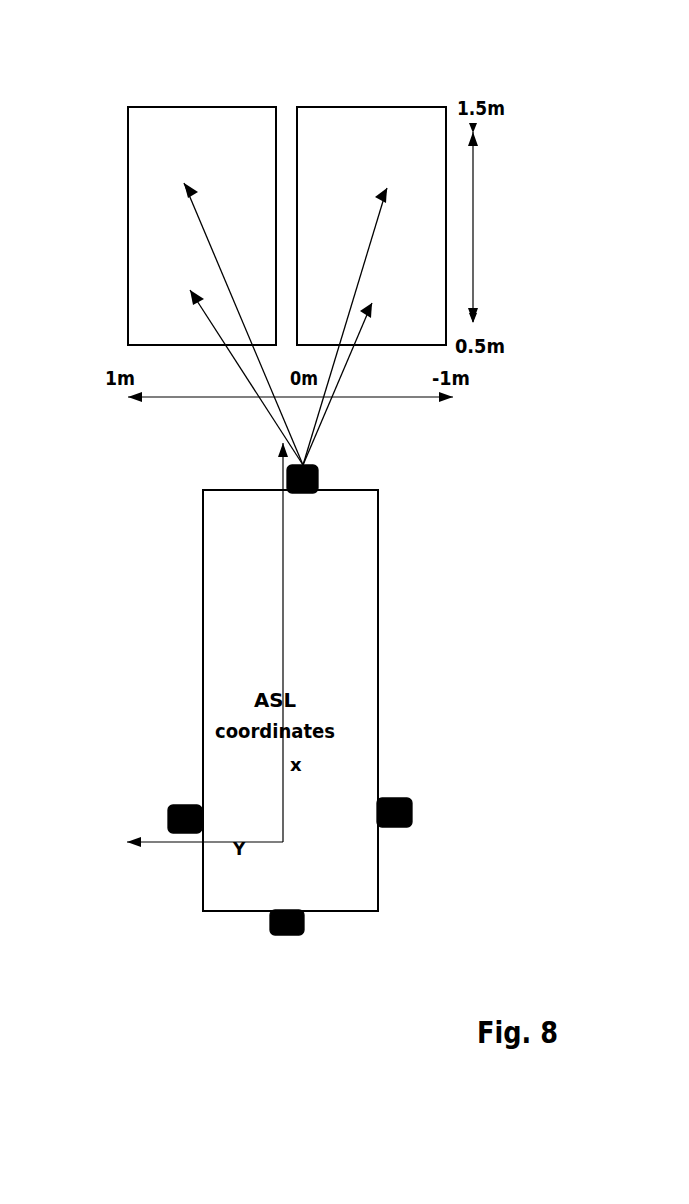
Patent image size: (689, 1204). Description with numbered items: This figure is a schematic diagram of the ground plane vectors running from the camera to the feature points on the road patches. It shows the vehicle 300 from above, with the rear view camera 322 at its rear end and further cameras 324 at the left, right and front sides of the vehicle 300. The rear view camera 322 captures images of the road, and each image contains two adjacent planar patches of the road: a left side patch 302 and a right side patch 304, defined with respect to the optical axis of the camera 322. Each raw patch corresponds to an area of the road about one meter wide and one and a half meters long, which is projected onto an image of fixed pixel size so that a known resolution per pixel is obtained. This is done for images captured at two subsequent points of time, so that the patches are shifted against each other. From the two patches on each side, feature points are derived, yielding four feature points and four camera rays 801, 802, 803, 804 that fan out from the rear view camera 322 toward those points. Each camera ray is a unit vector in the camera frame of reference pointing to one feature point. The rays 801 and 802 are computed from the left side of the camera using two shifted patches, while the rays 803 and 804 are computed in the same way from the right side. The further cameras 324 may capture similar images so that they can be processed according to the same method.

The vehicle 300 is at (203, 632).
The left side patch 302 is at (128, 157).
The right side patch 304 is at (372, 107).
The rear view camera 322 is at (318, 480).
The further cameras 324 is at (170, 806).
The camera ray 801 is at (207, 232).
The camera ray 802 is at (373, 213).
The camera ray 803 is at (203, 307).
The camera ray 804 is at (368, 335).